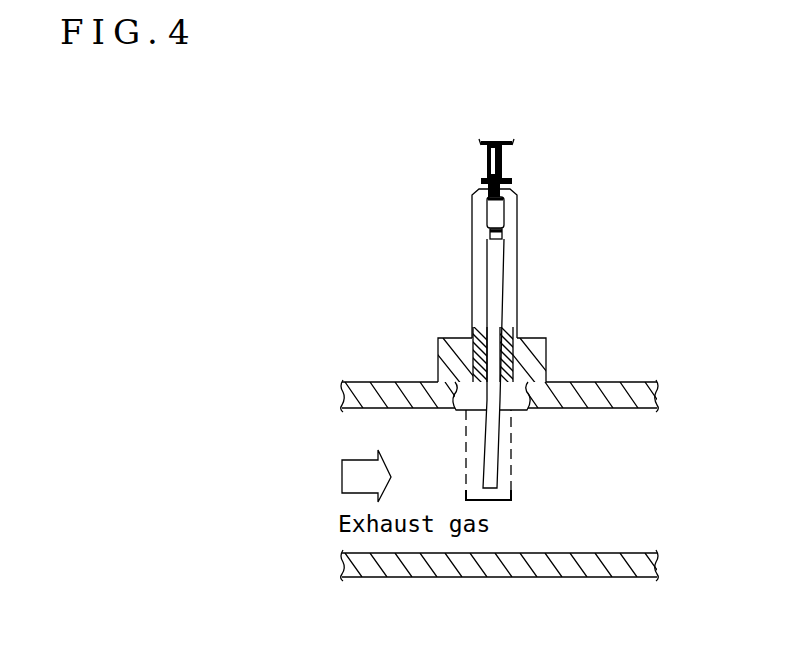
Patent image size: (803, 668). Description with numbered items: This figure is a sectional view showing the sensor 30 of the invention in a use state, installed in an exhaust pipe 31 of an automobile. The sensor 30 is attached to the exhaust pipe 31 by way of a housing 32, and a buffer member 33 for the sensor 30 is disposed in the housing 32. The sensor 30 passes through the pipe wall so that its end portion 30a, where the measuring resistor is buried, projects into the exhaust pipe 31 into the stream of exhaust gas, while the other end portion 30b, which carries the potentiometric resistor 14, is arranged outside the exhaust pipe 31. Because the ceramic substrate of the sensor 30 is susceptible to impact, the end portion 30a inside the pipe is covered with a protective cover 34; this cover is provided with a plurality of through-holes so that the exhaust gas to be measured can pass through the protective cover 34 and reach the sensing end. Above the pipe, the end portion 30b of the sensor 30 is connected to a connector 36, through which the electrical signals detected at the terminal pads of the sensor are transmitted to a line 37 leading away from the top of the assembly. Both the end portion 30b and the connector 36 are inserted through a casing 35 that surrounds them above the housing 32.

The potentiometric resistor 14 is at (503, 232).
The sensor 30 is at (514, 345).
The end portion 30a is at (491, 475).
The another end portion 30b is at (495, 261).
The exhaust pipe 31 is at (657, 392).
The housing 32 is at (447, 338).
The buffer member 33 is at (520, 358).
The protective cover 34 is at (511, 497).
The casing 35 is at (518, 272).
The connector 36 is at (497, 210).
The line 37 is at (502, 162).